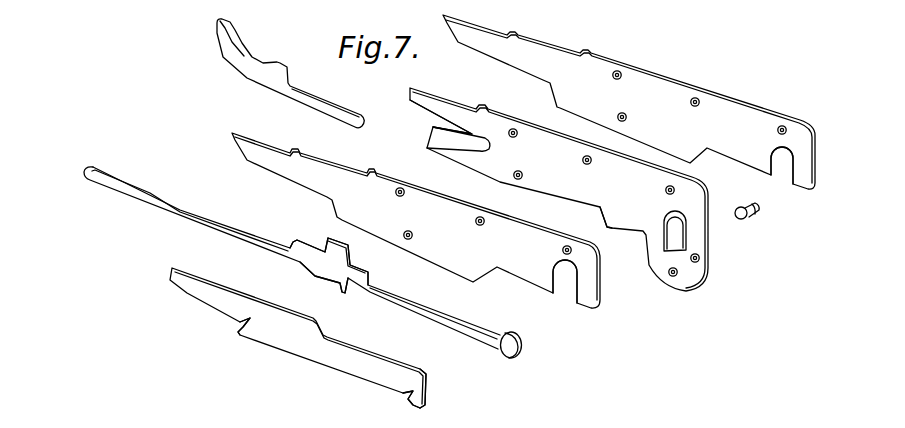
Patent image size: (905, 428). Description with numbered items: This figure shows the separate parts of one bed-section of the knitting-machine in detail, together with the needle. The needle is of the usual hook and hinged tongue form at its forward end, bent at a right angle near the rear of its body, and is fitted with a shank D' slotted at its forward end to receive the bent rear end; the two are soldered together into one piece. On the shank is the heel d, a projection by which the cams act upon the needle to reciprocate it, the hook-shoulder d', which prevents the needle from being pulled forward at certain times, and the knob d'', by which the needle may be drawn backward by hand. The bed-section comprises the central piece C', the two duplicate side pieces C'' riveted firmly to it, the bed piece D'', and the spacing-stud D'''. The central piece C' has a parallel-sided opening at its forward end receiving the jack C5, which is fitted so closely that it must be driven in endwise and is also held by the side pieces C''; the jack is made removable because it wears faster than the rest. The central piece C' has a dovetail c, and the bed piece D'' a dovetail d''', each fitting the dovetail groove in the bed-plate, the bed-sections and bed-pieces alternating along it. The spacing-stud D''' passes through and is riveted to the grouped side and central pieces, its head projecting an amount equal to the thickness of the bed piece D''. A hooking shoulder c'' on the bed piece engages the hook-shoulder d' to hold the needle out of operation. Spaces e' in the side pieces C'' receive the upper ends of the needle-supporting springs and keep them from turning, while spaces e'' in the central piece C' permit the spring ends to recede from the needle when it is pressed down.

The jack C5 is at (290, 73).
The central piece C' is at (559, 189).
The side pieces C'' is at (523, 161).
The dovetail c is at (515, 170).
The shoulder c'' is at (431, 382).
The spaces e' is at (673, 225).
The spaces e'' is at (665, 229).
The shank D' is at (309, 262).
The bed piece D'' is at (306, 338).
The spacing-stud D''' is at (739, 222).
The heel d is at (329, 256).
The hook-shoulder d' is at (317, 279).
The knob d'' is at (517, 336).
The dovetail d''' is at (314, 363).